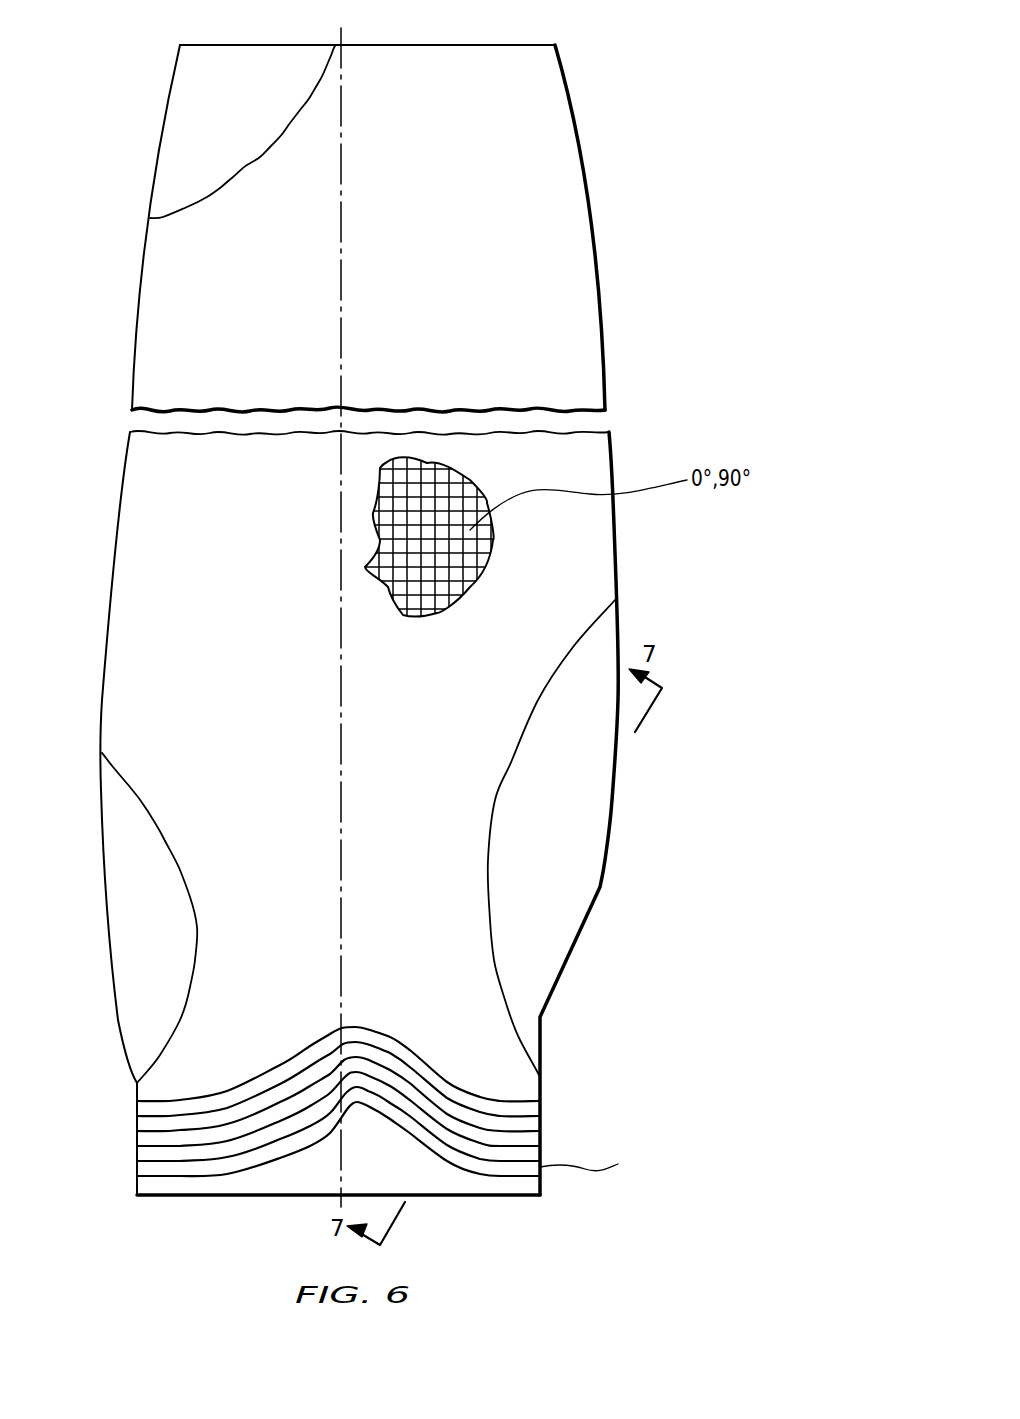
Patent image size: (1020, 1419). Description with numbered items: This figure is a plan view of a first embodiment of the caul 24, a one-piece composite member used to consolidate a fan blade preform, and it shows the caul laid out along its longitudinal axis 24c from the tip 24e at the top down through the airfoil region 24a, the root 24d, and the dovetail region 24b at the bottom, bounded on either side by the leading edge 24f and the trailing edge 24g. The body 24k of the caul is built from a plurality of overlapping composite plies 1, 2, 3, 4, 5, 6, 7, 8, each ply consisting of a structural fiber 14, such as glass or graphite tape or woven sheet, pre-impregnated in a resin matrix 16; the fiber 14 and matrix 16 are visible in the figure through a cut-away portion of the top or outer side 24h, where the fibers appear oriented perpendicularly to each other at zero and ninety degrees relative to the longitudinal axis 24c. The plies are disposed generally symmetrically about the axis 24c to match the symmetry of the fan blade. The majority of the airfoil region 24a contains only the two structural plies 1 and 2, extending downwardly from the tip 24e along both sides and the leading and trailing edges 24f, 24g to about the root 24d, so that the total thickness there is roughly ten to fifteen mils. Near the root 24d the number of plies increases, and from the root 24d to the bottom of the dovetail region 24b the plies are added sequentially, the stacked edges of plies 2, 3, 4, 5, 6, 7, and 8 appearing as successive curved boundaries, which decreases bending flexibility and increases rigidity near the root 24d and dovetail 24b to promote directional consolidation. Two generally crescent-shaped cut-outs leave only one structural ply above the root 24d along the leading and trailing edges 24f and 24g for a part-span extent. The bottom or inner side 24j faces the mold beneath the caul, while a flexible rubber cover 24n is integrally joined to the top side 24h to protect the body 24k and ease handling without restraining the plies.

The first composite ply 1 is at (540, 1037).
The second composite ply 2 is at (540, 1090).
The third composite ply 3 is at (540, 1105).
The fourth composite ply 4 is at (540, 1124).
The fifth composite ply 5 is at (540, 1138).
The sixth composite ply 6 is at (540, 1156).
The seventh composite ply 7 is at (587, 1164).
The eighth composite ply 8 is at (540, 1185).
The structural fiber 14 is at (465, 488).
The resin matrix 16 is at (410, 492).
The caul 24 is at (625, 288).
The airfoil region 24a is at (152, 287).
The dovetail region 24b is at (137, 1167).
The longitudinal axis 24c is at (341, 751).
The root 24d is at (137, 1090).
The tip 24e is at (462, 45).
The leading edge 24f is at (117, 520).
The trailing edge 24g is at (605, 372).
The top or outer side 24h is at (502, 173).
The bottom or inner side 24j is at (527, 125).
The body 24k is at (289, 612).
The flexible cover 24n is at (241, 128).